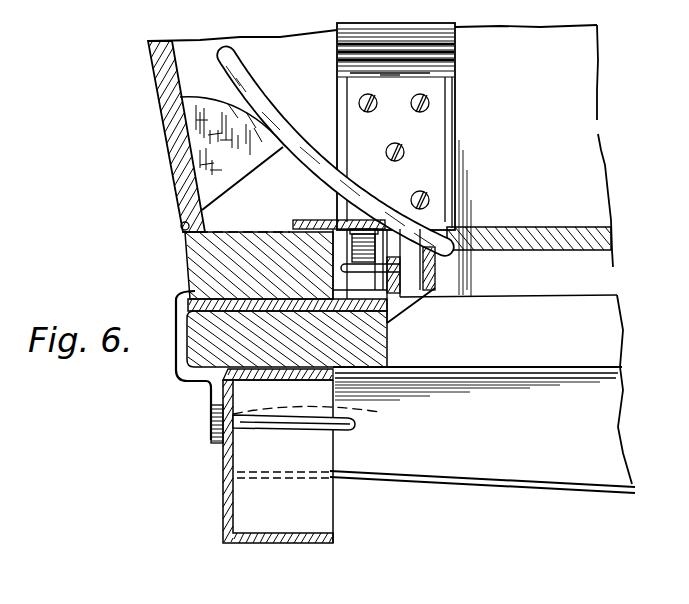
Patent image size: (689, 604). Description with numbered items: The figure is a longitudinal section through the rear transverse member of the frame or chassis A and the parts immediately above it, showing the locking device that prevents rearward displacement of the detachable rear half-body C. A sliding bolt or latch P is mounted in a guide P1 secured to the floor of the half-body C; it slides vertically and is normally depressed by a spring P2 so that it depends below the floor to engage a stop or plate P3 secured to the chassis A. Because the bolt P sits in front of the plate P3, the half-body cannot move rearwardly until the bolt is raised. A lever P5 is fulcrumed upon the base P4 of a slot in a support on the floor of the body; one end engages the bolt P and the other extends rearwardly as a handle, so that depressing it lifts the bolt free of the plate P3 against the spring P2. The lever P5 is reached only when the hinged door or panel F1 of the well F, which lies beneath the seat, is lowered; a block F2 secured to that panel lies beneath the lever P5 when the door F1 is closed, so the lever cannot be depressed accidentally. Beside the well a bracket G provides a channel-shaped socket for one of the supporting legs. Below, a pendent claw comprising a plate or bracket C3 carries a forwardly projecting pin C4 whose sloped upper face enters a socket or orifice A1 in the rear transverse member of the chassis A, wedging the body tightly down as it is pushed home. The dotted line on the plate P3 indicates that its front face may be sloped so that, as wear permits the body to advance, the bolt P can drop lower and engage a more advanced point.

The well F is at (268, 202).
The hinged door or panel F1 is at (150, 89).
The block F2 is at (217, 150).
The bracket G is at (447, 118).
The lever P5 is at (290, 127).
The sliding bolt or latch P is at (400, 295).
The guide P1 is at (440, 228).
The spring P2 is at (387, 225).
The stop or plate P3 is at (387, 343).
The base of slot P4 is at (388, 212).
The rear half-body C is at (592, 181).
The plate or bracket C3 is at (185, 384).
The forwardly projecting pin C4 is at (283, 432).
The frame or chassis A is at (423, 478).
The sockets or orifices A1 is at (352, 423).